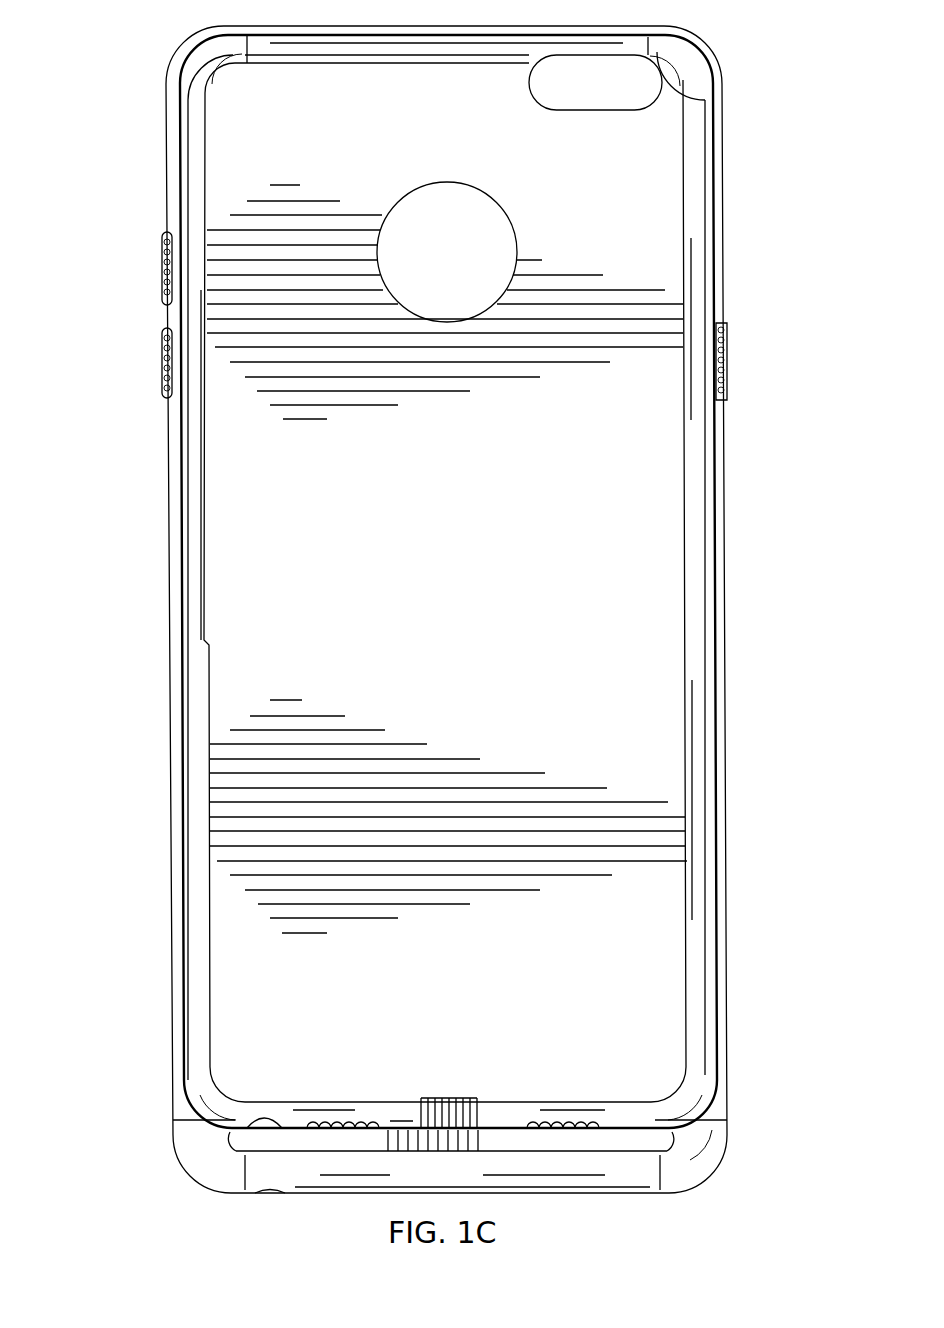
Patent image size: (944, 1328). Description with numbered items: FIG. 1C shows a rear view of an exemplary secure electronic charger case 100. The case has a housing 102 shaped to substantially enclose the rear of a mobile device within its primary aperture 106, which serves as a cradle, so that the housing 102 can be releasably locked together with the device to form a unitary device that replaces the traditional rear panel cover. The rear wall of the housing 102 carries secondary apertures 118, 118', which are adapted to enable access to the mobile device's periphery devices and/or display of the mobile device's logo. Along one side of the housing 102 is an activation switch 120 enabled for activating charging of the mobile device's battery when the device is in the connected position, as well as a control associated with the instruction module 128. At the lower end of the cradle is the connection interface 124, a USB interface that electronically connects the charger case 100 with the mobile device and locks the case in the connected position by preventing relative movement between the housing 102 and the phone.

The secure electronic charger case 100 is at (112, 74).
The housing 102 is at (165, 125).
The primary aperture 106 is at (522, 513).
The secondary aperture 118 is at (678, 64).
The secondary aperture 118' is at (610, 252).
The activation switch 120 is at (162, 248).
The instruction module 128 is at (162, 335).
The connection interface (USB) 124 is at (467, 1097).